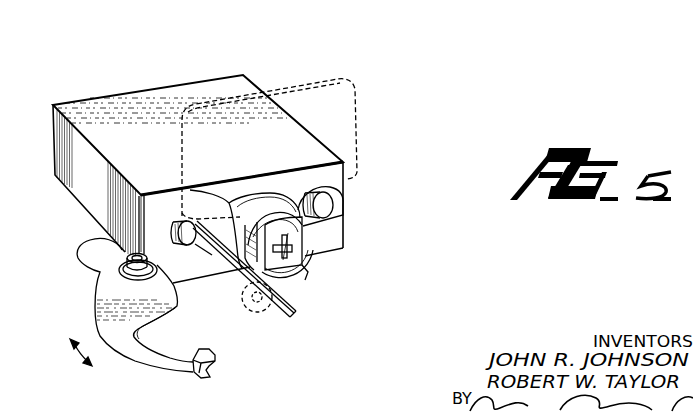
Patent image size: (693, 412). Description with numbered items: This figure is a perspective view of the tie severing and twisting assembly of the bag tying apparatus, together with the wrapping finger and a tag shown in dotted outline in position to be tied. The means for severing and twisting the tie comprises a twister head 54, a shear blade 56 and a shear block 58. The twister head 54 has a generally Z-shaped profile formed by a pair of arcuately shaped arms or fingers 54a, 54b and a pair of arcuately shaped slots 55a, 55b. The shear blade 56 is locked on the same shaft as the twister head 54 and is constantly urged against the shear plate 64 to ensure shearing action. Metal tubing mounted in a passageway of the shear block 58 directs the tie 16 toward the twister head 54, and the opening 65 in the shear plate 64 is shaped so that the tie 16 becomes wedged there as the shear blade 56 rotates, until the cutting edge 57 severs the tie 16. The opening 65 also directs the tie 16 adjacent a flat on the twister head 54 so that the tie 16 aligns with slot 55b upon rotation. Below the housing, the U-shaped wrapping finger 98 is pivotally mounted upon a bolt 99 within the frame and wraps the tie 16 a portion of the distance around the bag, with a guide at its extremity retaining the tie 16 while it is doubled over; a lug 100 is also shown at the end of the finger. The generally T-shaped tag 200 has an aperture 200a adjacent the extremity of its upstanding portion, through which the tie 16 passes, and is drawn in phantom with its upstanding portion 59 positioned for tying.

The tie 16 is at (293, 312).
The twister head 54 is at (307, 239).
The arcuately shaped arm or finger 54a is at (338, 192).
The arcuately shaped arm or finger 54b is at (313, 278).
The arcuately shaped slot 55a is at (303, 220).
The arcuately shaped slot 55b is at (313, 268).
The shear blade 56 is at (265, 193).
The cutting edge 57 is at (210, 194).
The shear block 58 is at (113, 97).
The housing 59 is at (173, 93).
The shear plate 64 is at (138, 217).
The opening 65 is at (177, 190).
The wrapping finger 98 is at (91, 302).
The bolt 99 is at (100, 268).
The lug 100 is at (213, 367).
The tag 200 is at (342, 76).
The aperture 200a is at (256, 313).